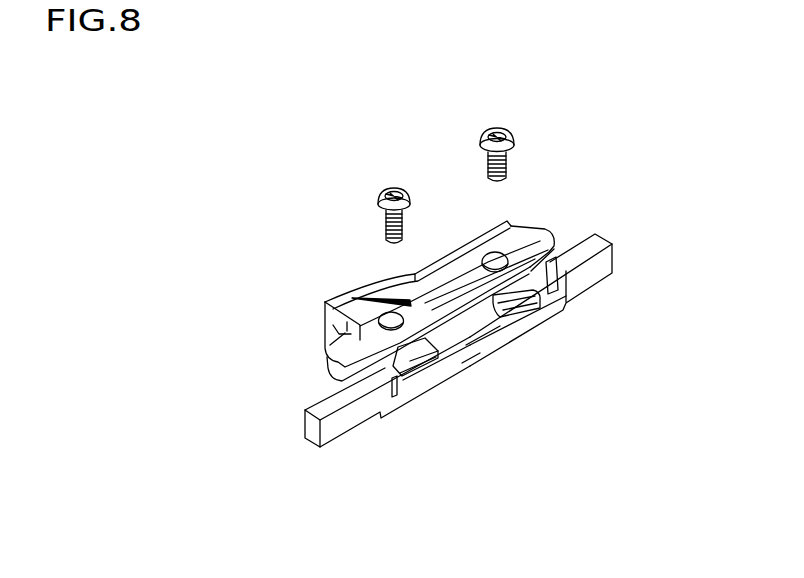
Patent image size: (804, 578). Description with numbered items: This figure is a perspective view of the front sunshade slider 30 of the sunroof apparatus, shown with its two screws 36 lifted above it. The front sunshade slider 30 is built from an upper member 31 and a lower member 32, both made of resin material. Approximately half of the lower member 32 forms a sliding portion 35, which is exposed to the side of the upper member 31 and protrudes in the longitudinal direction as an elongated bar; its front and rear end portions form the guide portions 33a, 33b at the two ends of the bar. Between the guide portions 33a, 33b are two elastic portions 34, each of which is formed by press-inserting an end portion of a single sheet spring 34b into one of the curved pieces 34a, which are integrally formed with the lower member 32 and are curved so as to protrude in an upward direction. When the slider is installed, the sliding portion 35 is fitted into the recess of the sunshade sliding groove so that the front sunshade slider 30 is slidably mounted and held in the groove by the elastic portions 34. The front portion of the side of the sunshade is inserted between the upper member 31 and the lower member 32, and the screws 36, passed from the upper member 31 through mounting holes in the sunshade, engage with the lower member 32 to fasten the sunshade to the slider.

The front sunshade slider 30 is at (557, 197).
The upper member 31 is at (517, 240).
The lower member 32 is at (332, 372).
The guide portion 33a is at (330, 430).
The guide portion 33b is at (614, 244).
The elastic portion 34 is at (525, 308).
The curved piece 34a is at (557, 258).
The sheet spring 34b is at (482, 335).
The sliding portion 35 is at (476, 368).
The screw 36 is at (393, 189).